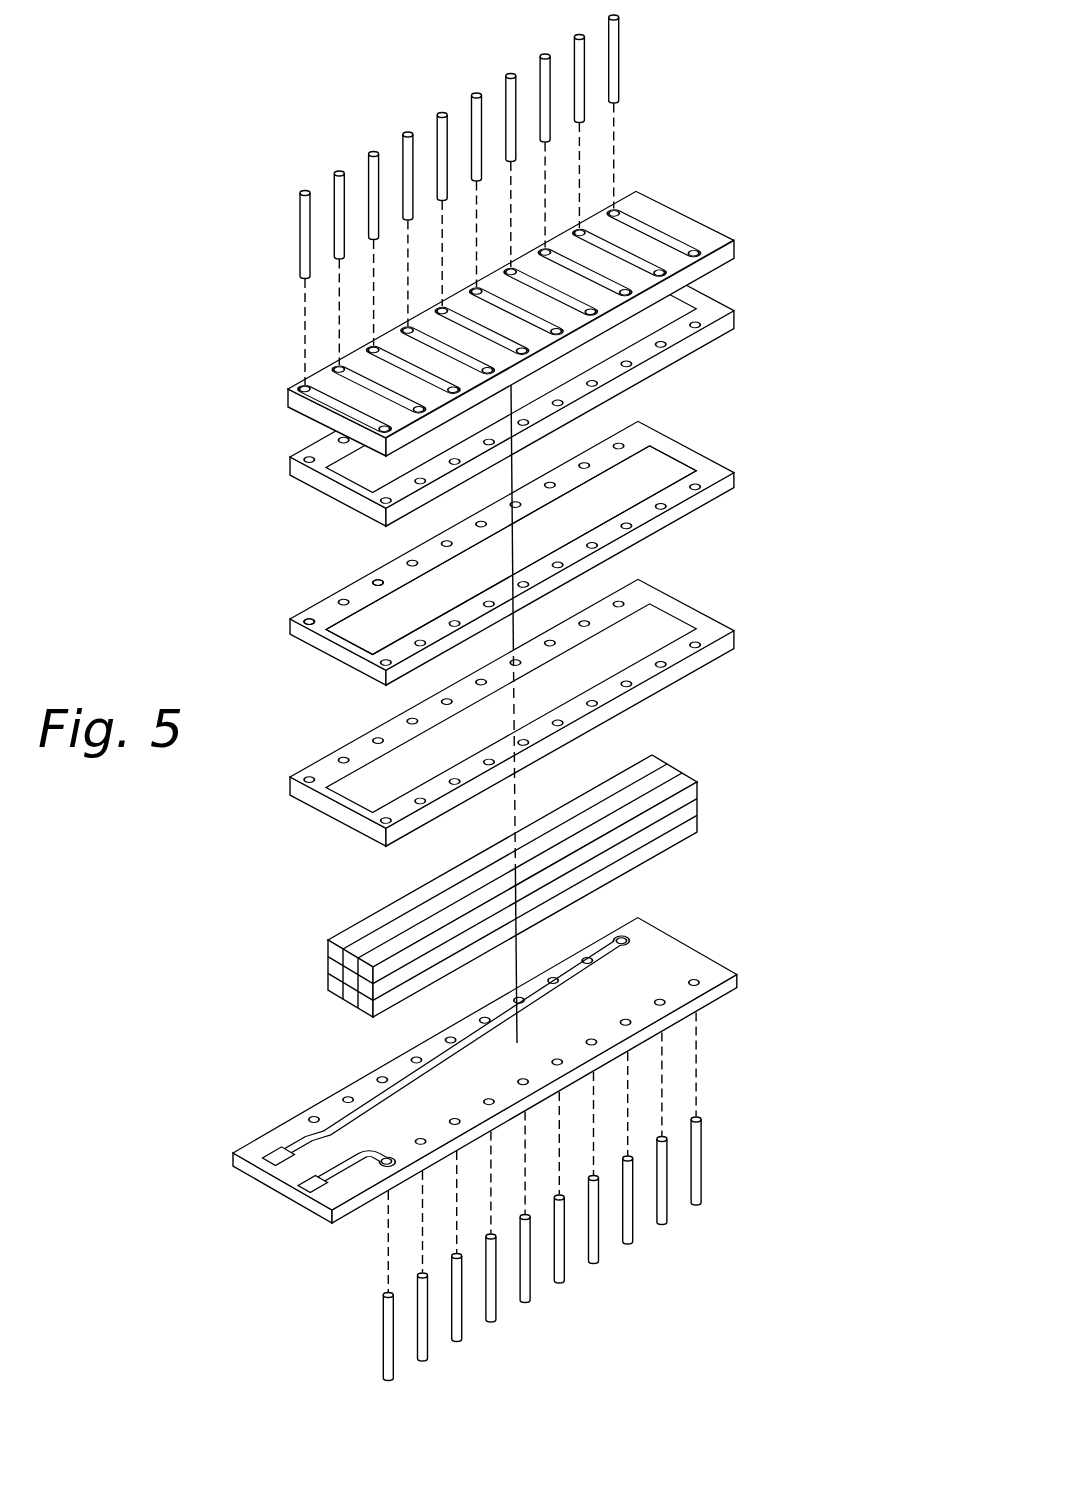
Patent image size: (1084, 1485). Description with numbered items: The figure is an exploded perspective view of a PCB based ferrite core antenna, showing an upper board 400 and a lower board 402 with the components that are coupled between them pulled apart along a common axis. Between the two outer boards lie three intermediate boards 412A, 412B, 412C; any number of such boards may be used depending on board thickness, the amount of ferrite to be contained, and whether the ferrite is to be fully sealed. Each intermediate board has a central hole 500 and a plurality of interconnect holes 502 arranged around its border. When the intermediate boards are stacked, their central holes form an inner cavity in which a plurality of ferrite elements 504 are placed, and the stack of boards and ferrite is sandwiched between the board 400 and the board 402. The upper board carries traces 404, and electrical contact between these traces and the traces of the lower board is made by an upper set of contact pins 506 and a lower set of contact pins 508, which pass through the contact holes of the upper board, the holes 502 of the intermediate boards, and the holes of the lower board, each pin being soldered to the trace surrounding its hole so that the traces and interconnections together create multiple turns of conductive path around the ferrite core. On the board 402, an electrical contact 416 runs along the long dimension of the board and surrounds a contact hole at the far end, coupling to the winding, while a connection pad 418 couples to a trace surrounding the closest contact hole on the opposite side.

The contact pins 506 is at (242, 102).
The traces 404 is at (651, 230).
The board 400 is at (549, 319).
The intermediate board 412A is at (732, 314).
The intermediate board 412B is at (530, 561).
The intermediate board 412C is at (733, 634).
The interconnect holes 502 is at (374, 576).
The central hole 500 is at (370, 635).
The ferrite elements 504 is at (698, 806).
The board 402 is at (502, 1080).
The electrical contact 416 is at (263, 1164).
The connection pad 418 is at (301, 1187).
The contact pins 508 is at (700, 1295).